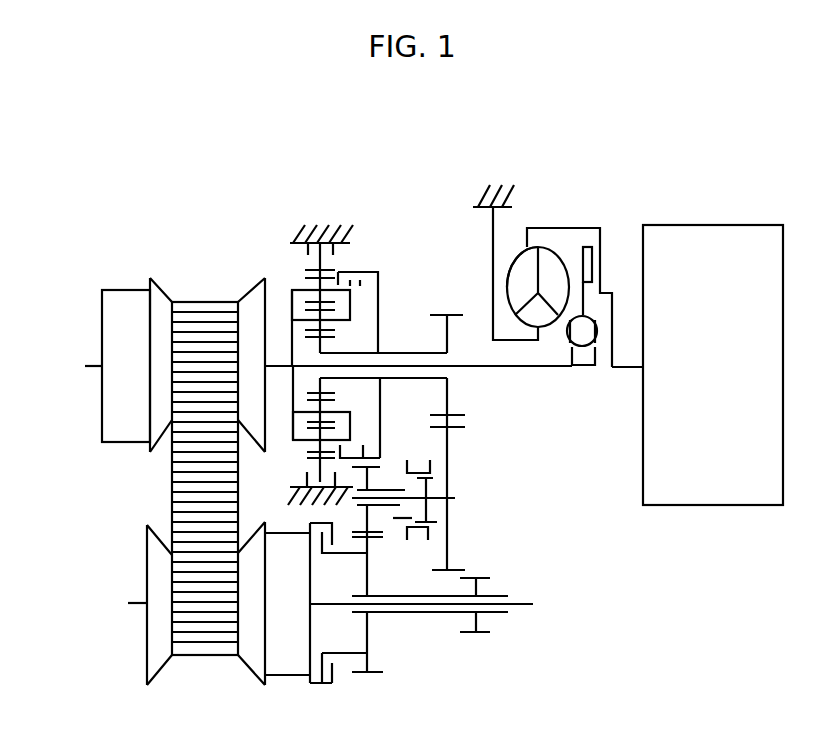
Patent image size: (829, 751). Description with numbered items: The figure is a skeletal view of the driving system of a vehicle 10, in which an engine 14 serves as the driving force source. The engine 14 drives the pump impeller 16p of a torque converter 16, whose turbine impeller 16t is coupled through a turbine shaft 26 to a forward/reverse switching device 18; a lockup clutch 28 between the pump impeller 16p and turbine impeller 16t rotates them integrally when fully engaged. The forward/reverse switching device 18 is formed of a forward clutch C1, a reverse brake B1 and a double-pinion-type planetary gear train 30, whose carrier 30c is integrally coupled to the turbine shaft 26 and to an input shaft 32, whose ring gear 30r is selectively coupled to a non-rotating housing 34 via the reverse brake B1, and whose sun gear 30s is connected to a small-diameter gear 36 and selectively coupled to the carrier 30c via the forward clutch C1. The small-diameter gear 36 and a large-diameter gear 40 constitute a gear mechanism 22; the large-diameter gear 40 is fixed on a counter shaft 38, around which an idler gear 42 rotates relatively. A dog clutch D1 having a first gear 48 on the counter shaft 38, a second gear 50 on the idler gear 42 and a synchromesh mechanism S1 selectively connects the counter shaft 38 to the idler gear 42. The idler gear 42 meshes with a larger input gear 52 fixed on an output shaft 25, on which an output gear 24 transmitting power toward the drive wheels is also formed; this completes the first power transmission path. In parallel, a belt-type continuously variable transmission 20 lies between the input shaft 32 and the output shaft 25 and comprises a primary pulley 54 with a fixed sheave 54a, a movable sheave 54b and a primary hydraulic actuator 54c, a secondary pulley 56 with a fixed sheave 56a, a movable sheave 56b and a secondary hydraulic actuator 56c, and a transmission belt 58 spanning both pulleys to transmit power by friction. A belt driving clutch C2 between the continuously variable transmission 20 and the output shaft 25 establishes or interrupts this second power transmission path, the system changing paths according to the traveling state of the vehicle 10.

The vehicle 10 is at (562, 158).
The engine 14 is at (700, 240).
The torque converter 16 is at (550, 340).
The pump impeller 16p is at (518, 262).
The turbine impeller 16t is at (553, 270).
The lockup clutch 28 is at (592, 262).
The housing 34 is at (498, 188).
The forward/reverse switching device 18 is at (372, 243).
The input shaft 32 is at (285, 363).
The reverse brake B1 is at (307, 260).
The ring gear 30r is at (300, 268).
The forward clutch C1 is at (351, 259).
The double-pinion-type planetary gear train 30 is at (365, 305).
The carrier 30c is at (352, 310).
The small-diameter gear 36 is at (453, 312).
The sun gear 30s is at (325, 395).
The dog clutch D1 is at (434, 411).
The gear mechanism 22 is at (480, 422).
The second gear 50 is at (418, 470).
The counter shaft 38 is at (453, 497).
The synchromesh mechanism S1 is at (398, 524).
The first gear 48 is at (431, 530).
The idler gear 42 is at (352, 530).
The large-diameter gear 40 is at (440, 570).
The output shaft 25 is at (420, 614).
The output gear 24 is at (470, 634).
The belt driving clutch C2 is at (338, 617).
The input gear 52 is at (374, 674).
The belt-type continuously variable transmission 20 is at (195, 265).
The primary pulley 54 is at (78, 339).
The primary hydraulic actuator 54c is at (120, 298).
The movable sheave 54b is at (160, 298).
The fixed sheave 54a is at (252, 300).
The transmission belt 58 is at (193, 515).
The secondary pulley 56 is at (108, 602).
The fixed sheave 56a is at (157, 568).
The movable sheave 56b is at (248, 660).
The secondary hydraulic actuator 56c is at (283, 676).
The turbine shaft 26 is at (466, 364).